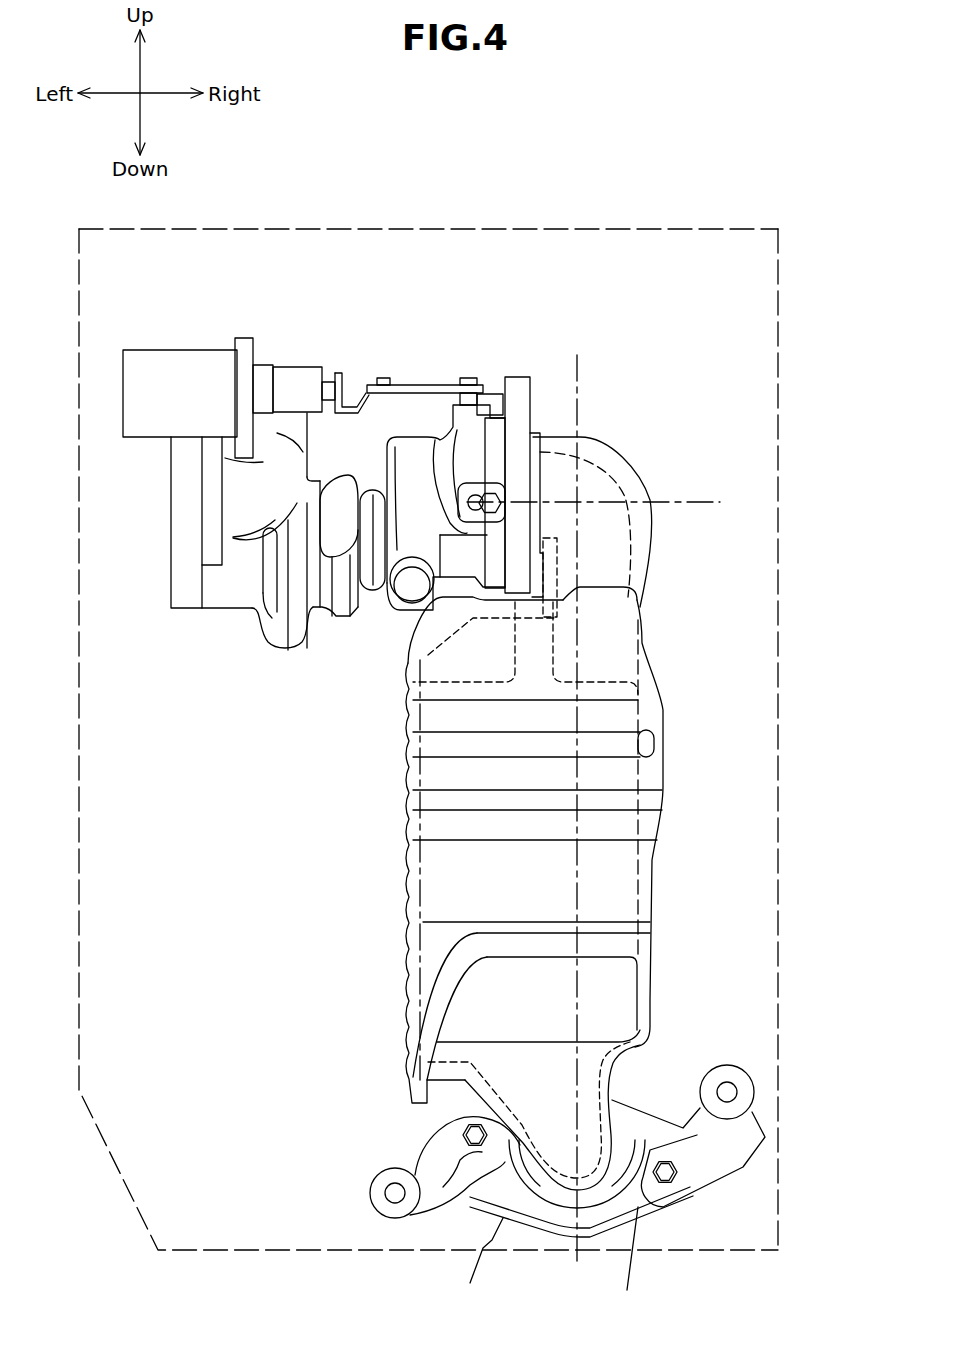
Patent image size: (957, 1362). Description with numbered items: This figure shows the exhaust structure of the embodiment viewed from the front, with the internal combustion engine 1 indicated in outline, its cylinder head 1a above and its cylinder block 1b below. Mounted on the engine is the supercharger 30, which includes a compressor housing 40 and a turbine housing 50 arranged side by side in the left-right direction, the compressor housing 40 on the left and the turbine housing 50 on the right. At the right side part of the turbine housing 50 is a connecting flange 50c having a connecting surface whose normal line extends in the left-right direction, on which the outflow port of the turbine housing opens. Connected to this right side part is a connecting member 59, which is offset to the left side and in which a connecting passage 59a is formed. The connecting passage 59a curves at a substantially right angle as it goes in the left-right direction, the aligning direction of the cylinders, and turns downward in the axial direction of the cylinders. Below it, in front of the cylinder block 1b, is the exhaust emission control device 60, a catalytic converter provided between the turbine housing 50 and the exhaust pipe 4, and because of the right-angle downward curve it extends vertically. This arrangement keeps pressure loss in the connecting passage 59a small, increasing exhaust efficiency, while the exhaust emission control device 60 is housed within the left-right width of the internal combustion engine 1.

The internal combustion engine 1 is at (687, 228).
The cylinder head 1a is at (780, 257).
The cylinder block 1b is at (780, 838).
The exhaust pipe 4 is at (610, 1267).
The supercharger 30 is at (309, 648).
The compressor housing 40 is at (266, 650).
The turbine housing 50 is at (396, 613).
The connecting flange 50c is at (498, 425).
The connecting member 59 is at (612, 462).
The connecting passage 59a is at (612, 487).
The exhaust emission control device 60 is at (655, 713).